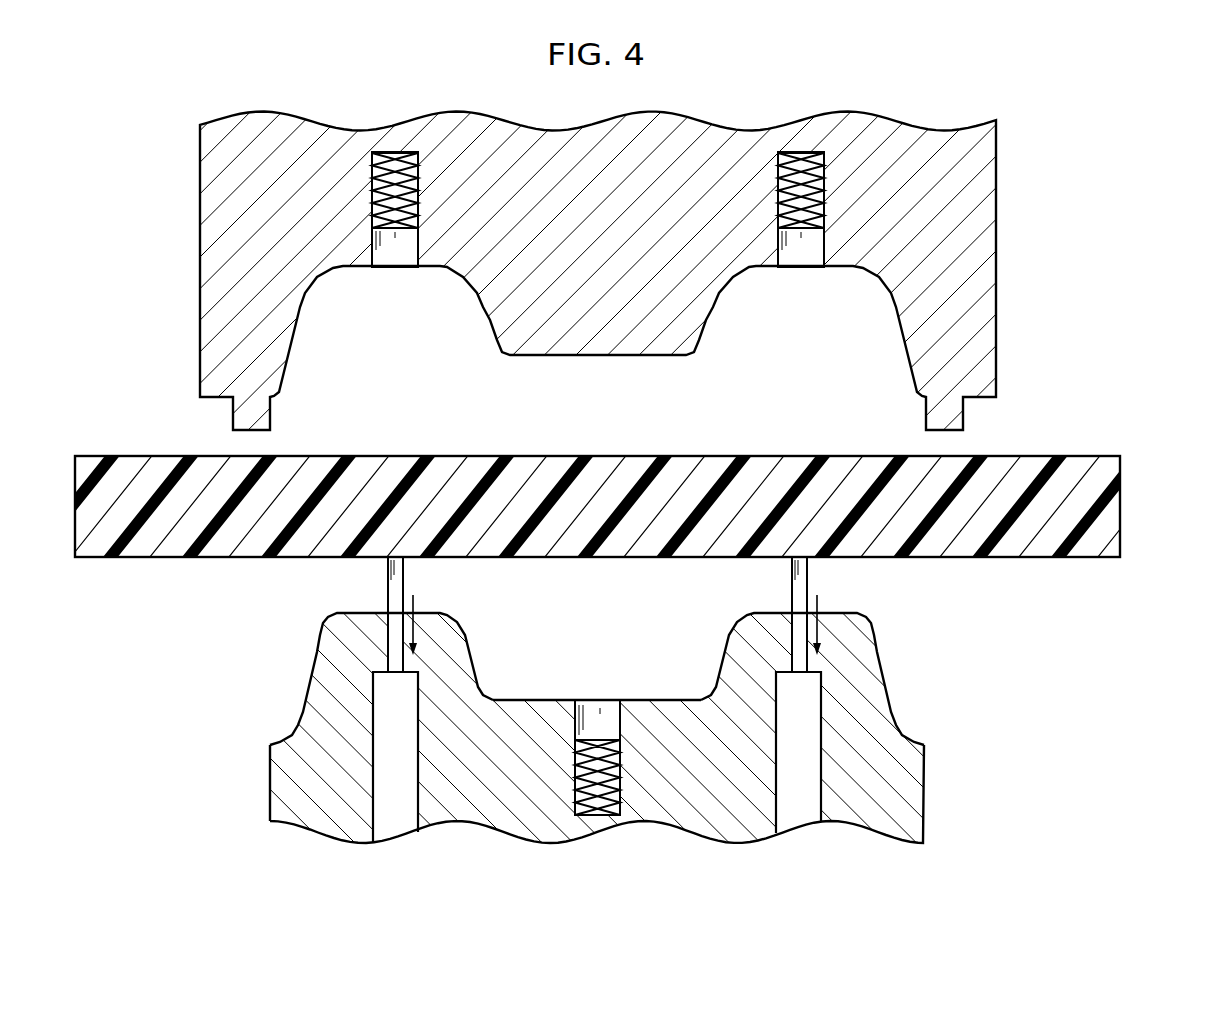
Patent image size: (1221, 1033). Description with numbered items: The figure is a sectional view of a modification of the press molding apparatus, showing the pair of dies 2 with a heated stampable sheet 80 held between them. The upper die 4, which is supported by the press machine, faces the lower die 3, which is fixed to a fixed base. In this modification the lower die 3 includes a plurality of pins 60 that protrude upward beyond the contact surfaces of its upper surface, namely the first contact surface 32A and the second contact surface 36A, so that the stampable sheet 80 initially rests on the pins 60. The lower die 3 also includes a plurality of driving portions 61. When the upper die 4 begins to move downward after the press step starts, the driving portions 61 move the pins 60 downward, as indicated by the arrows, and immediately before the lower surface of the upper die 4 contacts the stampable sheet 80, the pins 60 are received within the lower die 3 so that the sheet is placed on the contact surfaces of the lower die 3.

The dies 2 is at (610, 500).
The lower die 3 is at (610, 650).
The upper die 4 is at (607, 187).
The first contact surface 32A is at (352, 612).
The second contact surface 36A is at (756, 612).
The pins 60 is at (404, 585).
The driving portions 61 is at (408, 750).
The stampable sheet 80 is at (611, 470).